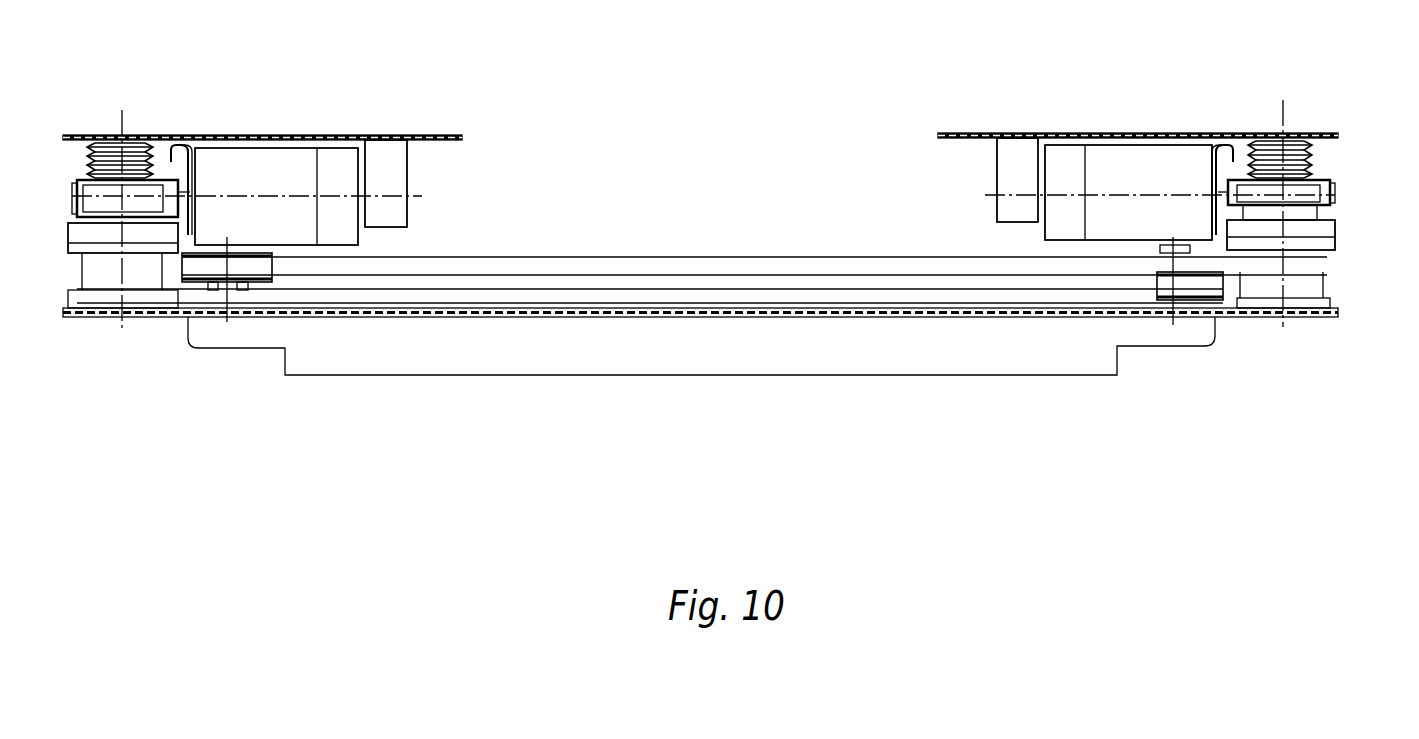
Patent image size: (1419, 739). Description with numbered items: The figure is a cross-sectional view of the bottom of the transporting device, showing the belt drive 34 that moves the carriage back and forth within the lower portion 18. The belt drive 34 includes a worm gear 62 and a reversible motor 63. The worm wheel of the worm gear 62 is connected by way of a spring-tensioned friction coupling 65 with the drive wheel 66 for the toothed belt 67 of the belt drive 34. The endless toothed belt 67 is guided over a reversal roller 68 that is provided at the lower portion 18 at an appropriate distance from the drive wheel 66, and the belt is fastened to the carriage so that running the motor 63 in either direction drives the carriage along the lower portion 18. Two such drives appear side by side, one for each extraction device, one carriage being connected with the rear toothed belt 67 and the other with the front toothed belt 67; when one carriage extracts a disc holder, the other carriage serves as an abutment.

The lower portion 18 is at (400, 136).
The belt drive 34 is at (449, 238).
The worm gear 62 is at (170, 153).
The reversible motor 63 is at (278, 180).
The spring-tensioned friction coupling 65 is at (150, 248).
The drive wheel 66 is at (97, 296).
The toothed belt 67 is at (648, 258).
The reversal roller 68 is at (257, 283).